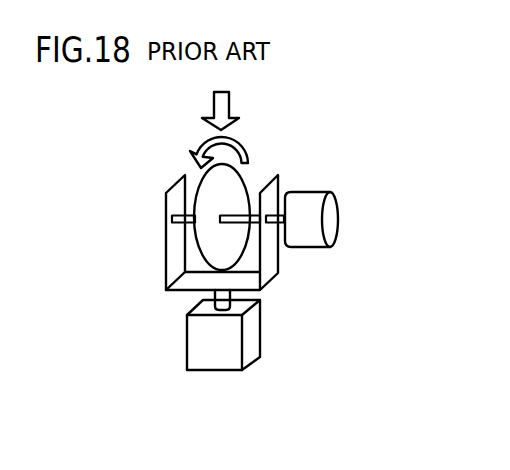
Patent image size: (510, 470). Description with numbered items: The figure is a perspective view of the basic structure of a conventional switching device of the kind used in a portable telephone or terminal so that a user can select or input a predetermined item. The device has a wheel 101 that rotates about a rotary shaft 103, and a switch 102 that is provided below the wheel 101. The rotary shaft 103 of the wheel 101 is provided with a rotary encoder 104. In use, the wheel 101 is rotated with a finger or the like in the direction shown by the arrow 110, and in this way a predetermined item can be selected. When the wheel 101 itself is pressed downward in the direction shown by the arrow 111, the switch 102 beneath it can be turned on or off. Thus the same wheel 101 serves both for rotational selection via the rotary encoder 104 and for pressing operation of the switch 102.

The wheel 101 is at (229, 192).
The switch 102 is at (250, 333).
The rotary shaft 103 is at (282, 215).
The rotary encoder 104 is at (333, 218).
The arrow 110 is at (198, 142).
The arrow 111 is at (222, 105).